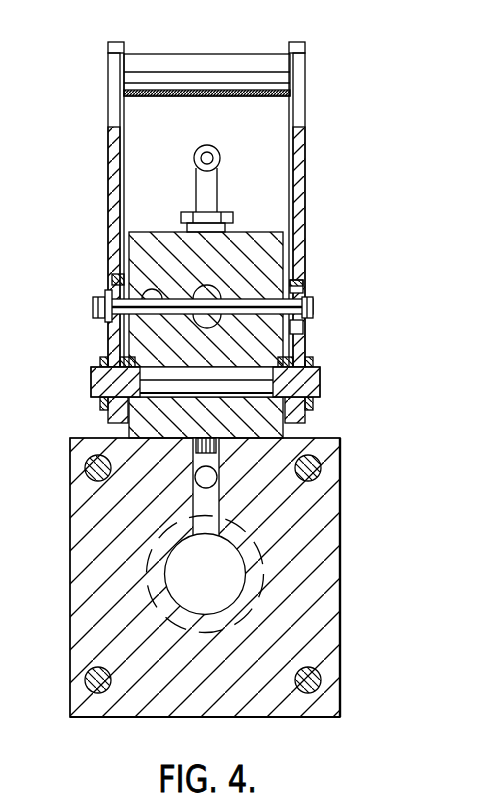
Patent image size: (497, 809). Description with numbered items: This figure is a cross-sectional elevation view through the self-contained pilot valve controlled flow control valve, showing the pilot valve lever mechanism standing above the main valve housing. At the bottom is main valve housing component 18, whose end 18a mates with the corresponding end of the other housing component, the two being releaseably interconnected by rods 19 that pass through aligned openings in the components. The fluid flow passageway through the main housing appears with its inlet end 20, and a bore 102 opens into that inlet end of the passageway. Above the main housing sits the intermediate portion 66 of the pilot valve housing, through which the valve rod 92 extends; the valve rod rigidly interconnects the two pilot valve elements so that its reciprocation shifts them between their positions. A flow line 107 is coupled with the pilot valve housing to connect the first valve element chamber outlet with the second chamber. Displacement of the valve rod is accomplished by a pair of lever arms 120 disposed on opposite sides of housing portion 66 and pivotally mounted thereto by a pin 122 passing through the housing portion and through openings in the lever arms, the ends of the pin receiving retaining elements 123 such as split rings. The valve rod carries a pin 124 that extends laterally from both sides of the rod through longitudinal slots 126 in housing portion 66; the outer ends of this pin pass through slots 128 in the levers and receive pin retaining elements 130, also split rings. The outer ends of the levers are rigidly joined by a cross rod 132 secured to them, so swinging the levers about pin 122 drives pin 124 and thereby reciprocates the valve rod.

The housing component 18 is at (348, 570).
The end of housing component 18a is at (318, 603).
The rods 19 is at (85, 468).
The inlet end 20 is at (205, 574).
The intermediate portion of pilot valve housing 66 is at (257, 236).
The valve rod 92 is at (212, 291).
The bore 102 is at (214, 509).
The flow line 107 is at (219, 172).
The lever arms 120 is at (108, 136).
The pin 122 is at (314, 385).
The retaining elements 123 is at (306, 362).
The pin 124 is at (192, 319).
The longitudinal slots 126 is at (148, 289).
The slots 128 is at (105, 292).
The pin retaining elements 130 is at (94, 316).
The cross rod 132 is at (250, 62).